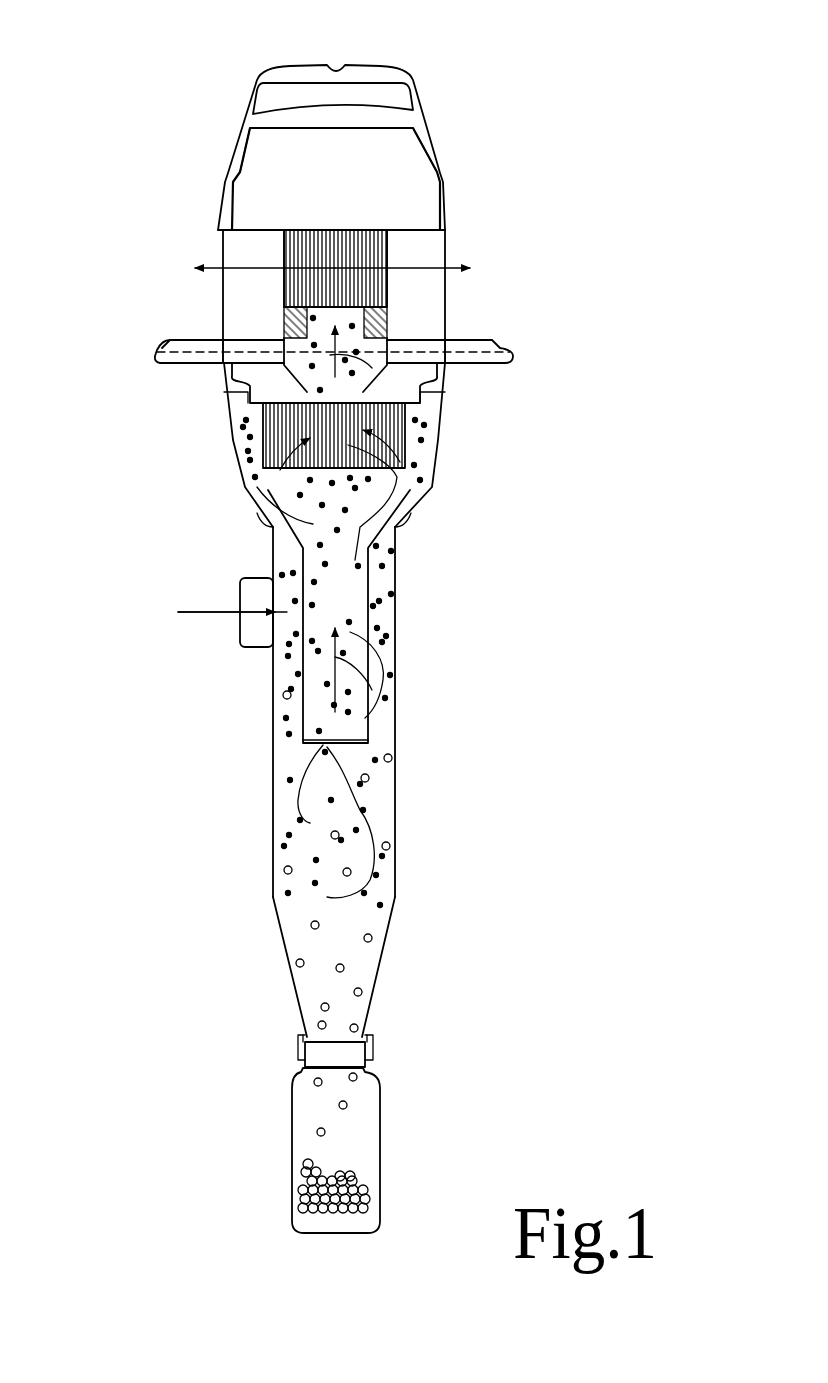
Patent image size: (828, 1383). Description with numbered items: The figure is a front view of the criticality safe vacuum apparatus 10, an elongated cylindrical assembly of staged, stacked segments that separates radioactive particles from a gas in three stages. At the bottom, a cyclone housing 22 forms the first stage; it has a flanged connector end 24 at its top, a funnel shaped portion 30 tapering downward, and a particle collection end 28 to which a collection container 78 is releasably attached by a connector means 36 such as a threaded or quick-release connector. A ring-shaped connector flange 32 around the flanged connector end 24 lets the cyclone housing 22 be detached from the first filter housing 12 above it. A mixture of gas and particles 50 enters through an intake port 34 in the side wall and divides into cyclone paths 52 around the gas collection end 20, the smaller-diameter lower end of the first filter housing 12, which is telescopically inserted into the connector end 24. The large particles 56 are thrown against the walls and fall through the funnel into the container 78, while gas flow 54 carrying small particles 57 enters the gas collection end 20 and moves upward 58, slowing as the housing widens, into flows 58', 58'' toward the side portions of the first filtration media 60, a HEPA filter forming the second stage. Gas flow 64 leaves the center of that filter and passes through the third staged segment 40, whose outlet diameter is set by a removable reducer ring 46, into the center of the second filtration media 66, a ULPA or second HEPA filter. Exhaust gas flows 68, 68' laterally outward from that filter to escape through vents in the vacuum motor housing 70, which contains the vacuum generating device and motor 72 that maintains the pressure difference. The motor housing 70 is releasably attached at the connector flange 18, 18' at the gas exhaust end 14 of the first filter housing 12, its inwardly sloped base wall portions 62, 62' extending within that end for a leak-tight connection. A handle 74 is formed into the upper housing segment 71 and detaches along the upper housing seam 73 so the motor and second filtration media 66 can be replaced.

The vacuum apparatus 10 is at (163, 70).
The first filter housing 12 is at (235, 452).
The gas exhaust end 14 is at (455, 378).
The connector flange 18 is at (286, 341).
The connector flange 18' is at (501, 327).
The gas collection end 20 is at (390, 760).
The cyclone housing 22 is at (275, 808).
The flanged connector end 24 is at (396, 540).
The particle collection end 28 is at (310, 997).
The funnel shaped portion 30 is at (348, 948).
The connector flange 32 is at (262, 521).
The intake port 34 is at (245, 578).
The connector means 36 is at (370, 1045).
The third staged segment 40 is at (408, 381).
The reducer ring 46 is at (292, 322).
The gas and particles 50 is at (200, 613).
The cyclone paths 52 is at (368, 686).
The gas flow 54 is at (370, 817).
The large particles 56 is at (300, 963).
The small particles 57 is at (302, 738).
The upward gas movement 58 is at (395, 670).
The gas flow 58' is at (431, 502).
The gas flow 58'' is at (220, 492).
The first filtration media 60 is at (415, 457).
The base wall portion 62 is at (197, 384).
The base wall portion 62' is at (457, 357).
The gas flow 64 is at (415, 426).
The second filtration media 66 is at (353, 232).
The exhaust gas flow 68 is at (236, 230).
The exhaust gas flow 68' is at (425, 230).
The vacuum motor housing 70 is at (440, 125).
The upper housing segment 71 is at (445, 288).
The vacuum generating device and motor 72 is at (253, 170).
The upper housing seam 73 is at (420, 232).
The handle 74 is at (398, 96).
The collection container 78 is at (357, 1125).